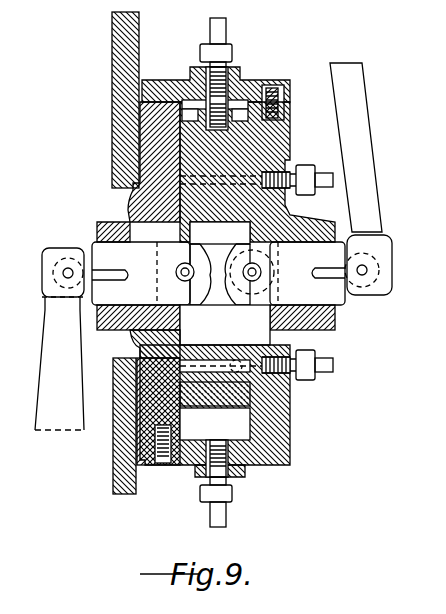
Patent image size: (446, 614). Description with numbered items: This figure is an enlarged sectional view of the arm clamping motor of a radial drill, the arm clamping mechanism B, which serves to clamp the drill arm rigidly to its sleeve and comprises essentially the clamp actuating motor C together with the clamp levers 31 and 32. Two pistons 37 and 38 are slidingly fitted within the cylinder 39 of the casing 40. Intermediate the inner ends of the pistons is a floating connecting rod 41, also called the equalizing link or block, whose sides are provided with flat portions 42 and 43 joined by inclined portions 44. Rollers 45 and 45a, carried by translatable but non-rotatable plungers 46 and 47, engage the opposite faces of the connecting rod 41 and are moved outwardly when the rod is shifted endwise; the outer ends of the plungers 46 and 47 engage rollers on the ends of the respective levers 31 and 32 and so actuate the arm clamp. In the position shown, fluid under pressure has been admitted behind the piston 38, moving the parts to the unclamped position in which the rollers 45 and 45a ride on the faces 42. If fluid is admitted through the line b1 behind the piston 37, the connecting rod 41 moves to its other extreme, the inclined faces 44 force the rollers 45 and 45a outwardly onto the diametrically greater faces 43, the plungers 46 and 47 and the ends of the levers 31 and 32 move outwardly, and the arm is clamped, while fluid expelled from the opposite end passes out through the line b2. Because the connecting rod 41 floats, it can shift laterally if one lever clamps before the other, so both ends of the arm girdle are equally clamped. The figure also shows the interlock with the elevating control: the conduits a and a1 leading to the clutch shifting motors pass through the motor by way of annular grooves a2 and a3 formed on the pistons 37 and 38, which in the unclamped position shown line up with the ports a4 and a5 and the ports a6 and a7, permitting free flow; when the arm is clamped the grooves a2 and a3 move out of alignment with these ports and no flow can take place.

The arm clamping mechanism B is at (94, 253).
The port a5 is at (135, 168).
The piston 37 is at (272, 113).
The annular groove a2 is at (180, 183).
The floating connecting rod 41 is at (285, 212).
The line b1 is at (225, 35).
The conduit a is at (288, 164).
The port a4 is at (256, 169).
The clamp lever 31 is at (372, 178).
The plunger 47 is at (141, 286).
The roller 45a is at (175, 262).
The roller 45 is at (307, 286).
The plunger 46 is at (307, 286).
The flat portion 43 is at (262, 226).
The inclined portion 44 is at (250, 248).
The flat portion 42 is at (218, 305).
The casing 40 is at (278, 428).
The port a7 is at (218, 360).
The annular groove a3 is at (238, 360).
The piston 38 is at (252, 386).
The cylinder 39 is at (215, 424).
The line b2 is at (226, 516).
The clamp actuating motor C is at (320, 347).
The conduit a1 is at (320, 358).
The port a6 is at (300, 350).
The clamp lever 32 is at (59, 339).